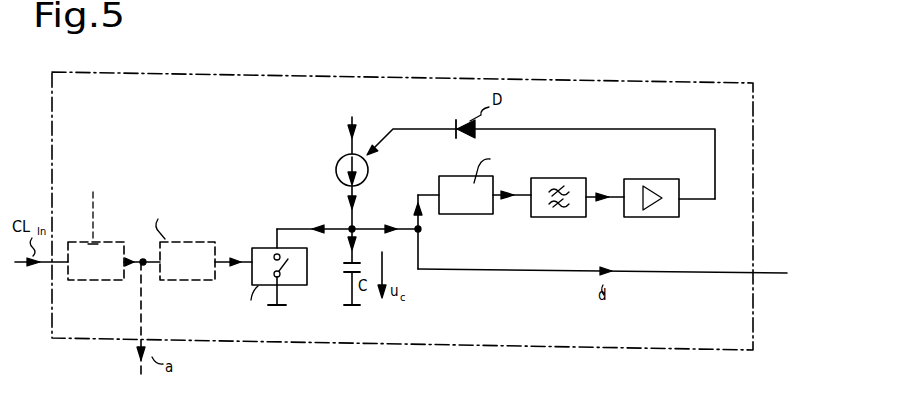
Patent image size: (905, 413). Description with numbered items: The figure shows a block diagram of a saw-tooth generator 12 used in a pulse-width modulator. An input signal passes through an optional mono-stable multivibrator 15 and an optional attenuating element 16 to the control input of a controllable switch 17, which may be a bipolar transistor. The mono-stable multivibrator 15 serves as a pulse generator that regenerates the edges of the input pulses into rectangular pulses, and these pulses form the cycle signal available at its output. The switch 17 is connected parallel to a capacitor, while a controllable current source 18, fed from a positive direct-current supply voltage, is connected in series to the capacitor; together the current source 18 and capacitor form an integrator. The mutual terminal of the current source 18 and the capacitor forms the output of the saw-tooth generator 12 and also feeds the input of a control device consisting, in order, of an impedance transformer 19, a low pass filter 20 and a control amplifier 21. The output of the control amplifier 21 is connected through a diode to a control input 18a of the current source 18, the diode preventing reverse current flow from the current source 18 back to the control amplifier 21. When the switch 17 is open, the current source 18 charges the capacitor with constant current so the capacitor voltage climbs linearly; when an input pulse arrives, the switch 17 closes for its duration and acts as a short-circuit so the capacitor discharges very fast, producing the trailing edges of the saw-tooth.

The saw-tooth generator 12 is at (684, 334).
The mono-stable multivibrator 15 is at (95, 281).
The attenuating element 16 is at (186, 281).
The controllable switch 17 is at (297, 283).
The controllable current source 18 is at (368, 176).
The control input of the controllable current source 18a is at (366, 159).
The impedance transformer 19 is at (461, 215).
The low pass filter 20 is at (556, 218).
The control amplifier 21 is at (641, 219).